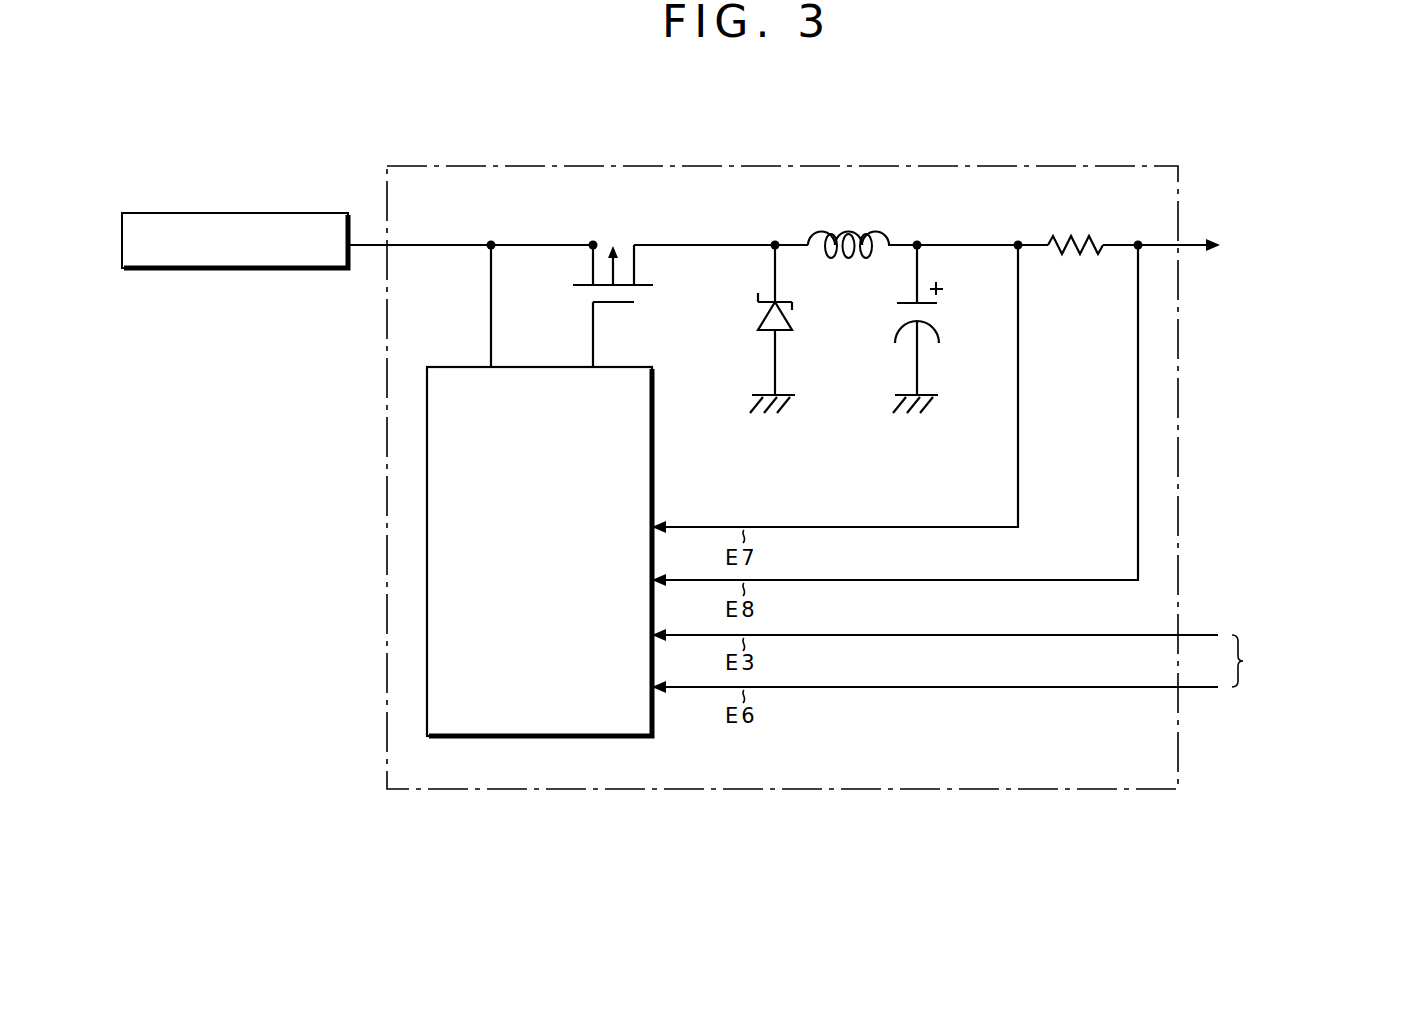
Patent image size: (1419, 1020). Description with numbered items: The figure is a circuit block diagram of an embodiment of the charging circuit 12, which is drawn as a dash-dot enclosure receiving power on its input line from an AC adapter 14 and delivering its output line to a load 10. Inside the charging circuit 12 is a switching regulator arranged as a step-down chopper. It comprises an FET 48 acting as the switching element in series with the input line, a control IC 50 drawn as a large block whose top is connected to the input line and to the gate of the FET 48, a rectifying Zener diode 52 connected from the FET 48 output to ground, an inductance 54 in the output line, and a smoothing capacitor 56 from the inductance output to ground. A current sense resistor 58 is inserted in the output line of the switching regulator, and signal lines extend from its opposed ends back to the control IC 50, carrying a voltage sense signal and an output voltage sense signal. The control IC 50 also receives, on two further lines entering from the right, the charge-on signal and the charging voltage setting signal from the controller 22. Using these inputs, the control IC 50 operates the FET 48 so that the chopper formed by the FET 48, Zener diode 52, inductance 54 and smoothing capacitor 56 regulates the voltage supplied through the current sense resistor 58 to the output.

The load / device powered 10 is at (1226, 250).
The charging circuit 12 is at (803, 166).
The AC adapter 14 is at (238, 213).
The controller 22 is at (1012, 661).
The FET 48 is at (622, 244).
The control IC 50 is at (435, 367).
The rectifying Zener diode 52 is at (790, 314).
The inductance 54 is at (843, 231).
The smoothing capacitor 56 is at (937, 318).
The current sense resistor 58 is at (1078, 236).